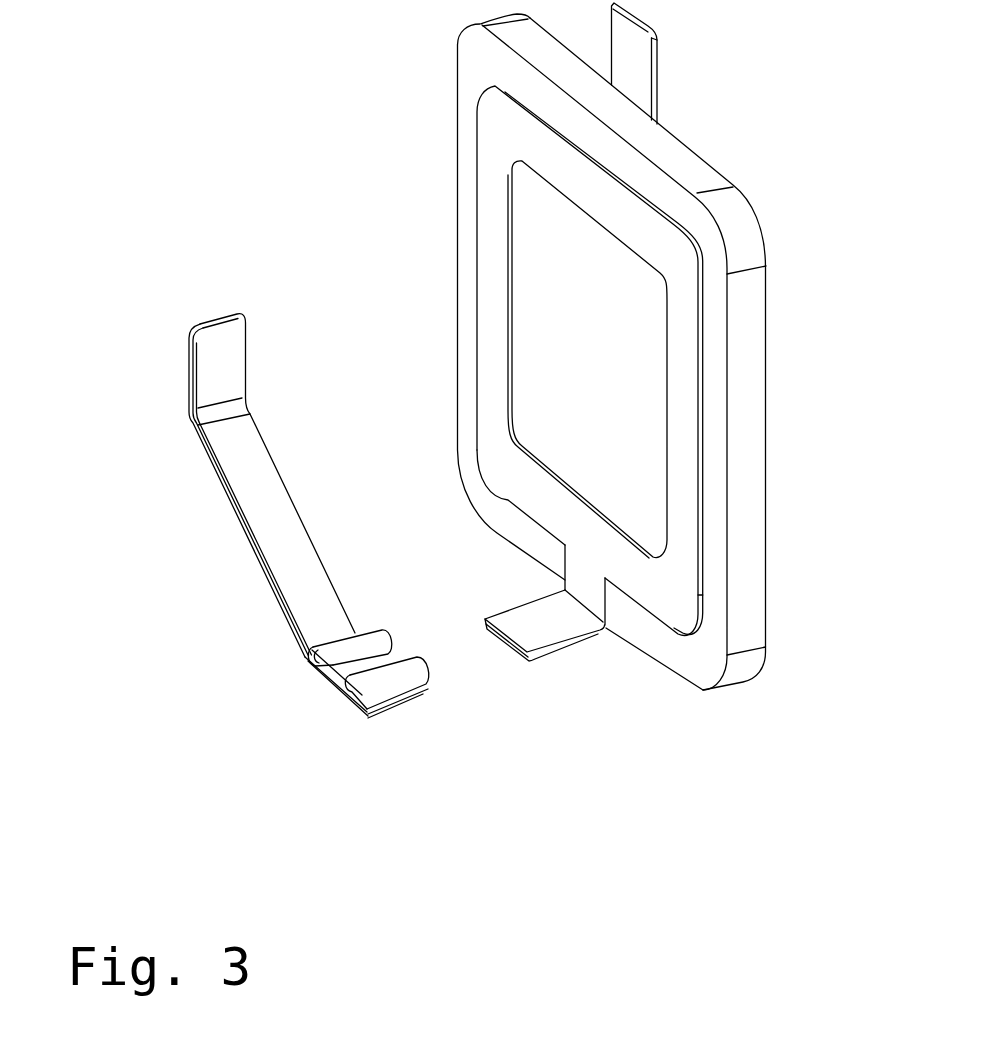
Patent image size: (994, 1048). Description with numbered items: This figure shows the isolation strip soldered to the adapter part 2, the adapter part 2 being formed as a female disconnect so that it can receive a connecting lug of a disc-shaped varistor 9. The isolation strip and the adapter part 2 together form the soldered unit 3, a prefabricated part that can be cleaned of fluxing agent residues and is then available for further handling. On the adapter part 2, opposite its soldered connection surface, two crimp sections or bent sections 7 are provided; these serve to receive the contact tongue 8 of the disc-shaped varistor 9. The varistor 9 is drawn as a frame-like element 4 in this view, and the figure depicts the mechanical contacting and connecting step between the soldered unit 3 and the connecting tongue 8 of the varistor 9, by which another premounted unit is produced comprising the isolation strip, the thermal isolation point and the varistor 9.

The adapter part 2 is at (350, 528).
The soldered unit 3 is at (236, 538).
The frame 4 is at (612, 381).
The crimp sections 7 is at (387, 638).
The contact tongue 8 is at (537, 617).
The disc-shaped varistor 9 is at (687, 162).